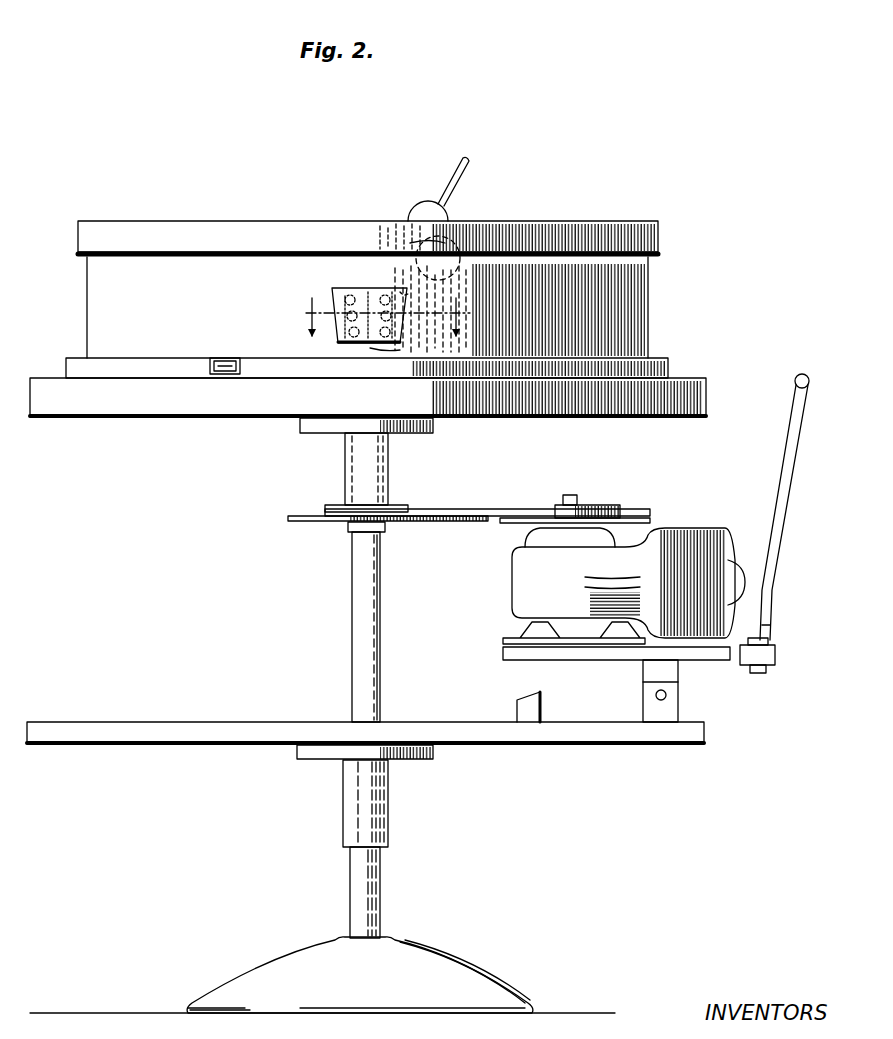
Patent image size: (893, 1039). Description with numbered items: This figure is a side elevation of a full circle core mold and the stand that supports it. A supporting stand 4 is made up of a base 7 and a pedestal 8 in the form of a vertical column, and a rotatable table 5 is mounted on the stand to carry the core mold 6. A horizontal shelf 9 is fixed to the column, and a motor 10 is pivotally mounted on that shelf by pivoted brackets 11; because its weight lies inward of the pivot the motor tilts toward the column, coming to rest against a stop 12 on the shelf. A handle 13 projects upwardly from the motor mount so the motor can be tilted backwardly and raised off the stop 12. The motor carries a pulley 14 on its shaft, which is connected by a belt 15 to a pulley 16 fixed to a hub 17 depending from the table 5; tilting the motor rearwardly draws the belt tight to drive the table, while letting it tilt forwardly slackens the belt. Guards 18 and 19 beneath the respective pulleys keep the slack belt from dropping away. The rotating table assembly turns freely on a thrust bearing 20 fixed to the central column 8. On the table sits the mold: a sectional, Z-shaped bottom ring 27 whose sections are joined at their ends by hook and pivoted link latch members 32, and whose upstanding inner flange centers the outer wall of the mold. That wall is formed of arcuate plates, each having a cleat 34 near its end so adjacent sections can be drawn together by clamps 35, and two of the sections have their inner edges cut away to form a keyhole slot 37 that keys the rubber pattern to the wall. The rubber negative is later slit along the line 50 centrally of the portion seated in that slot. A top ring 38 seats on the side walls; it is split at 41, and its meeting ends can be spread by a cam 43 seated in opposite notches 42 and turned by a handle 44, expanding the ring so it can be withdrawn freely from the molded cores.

The top ring 38 is at (275, 226).
The core mold 6 is at (652, 330).
The bottom ring 27 is at (77, 366).
The rotatable table 5 is at (150, 402).
The latch members 32 is at (233, 357).
The hub 17 is at (388, 470).
The pulley 16 is at (330, 505).
The belt 15 is at (462, 518).
The guard 19 is at (298, 522).
The thrust bearing 20 is at (384, 532).
The supporting stand 4 is at (390, 812).
The pedestal 8 is at (372, 892).
The base 7 is at (447, 968).
The shelf 9 is at (460, 724).
The motor 10 is at (686, 553).
The pulley 14 is at (594, 505).
The guard 18 is at (637, 518).
The pivoted brackets 11 is at (678, 700).
The stop 12 is at (540, 712).
The handle 13 is at (778, 482).
The clamps 35 is at (350, 288).
The slit line 50 is at (375, 352).
The keyhole slot 37 is at (407, 279).
The notches 42 is at (443, 261).
The cam 43 is at (428, 208).
The handle 44 is at (460, 170).
The split 41 is at (435, 243).
The cleat 34 is at (377, 314).